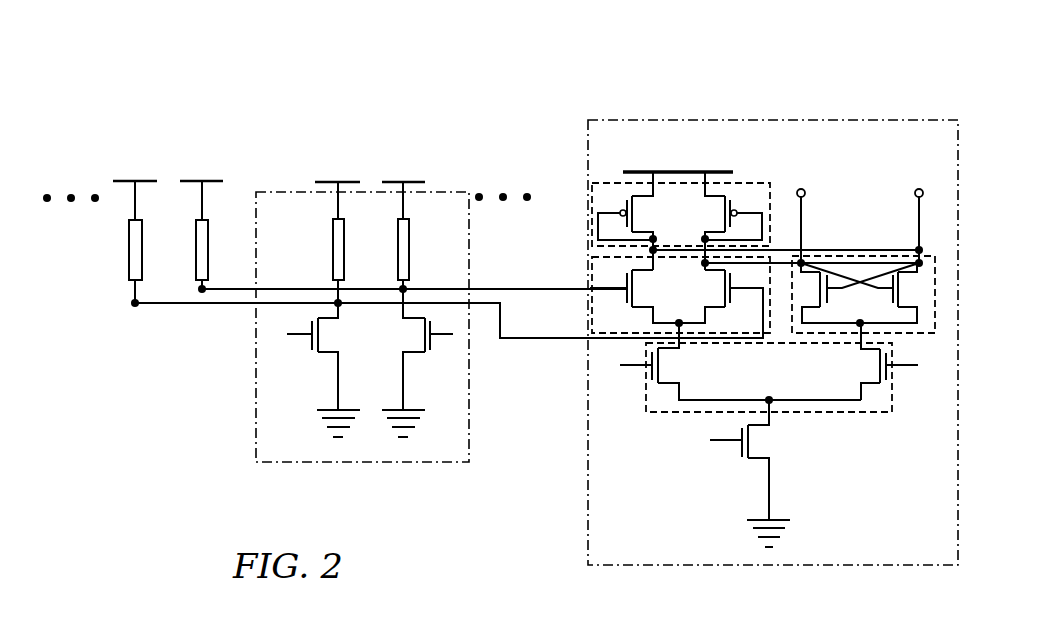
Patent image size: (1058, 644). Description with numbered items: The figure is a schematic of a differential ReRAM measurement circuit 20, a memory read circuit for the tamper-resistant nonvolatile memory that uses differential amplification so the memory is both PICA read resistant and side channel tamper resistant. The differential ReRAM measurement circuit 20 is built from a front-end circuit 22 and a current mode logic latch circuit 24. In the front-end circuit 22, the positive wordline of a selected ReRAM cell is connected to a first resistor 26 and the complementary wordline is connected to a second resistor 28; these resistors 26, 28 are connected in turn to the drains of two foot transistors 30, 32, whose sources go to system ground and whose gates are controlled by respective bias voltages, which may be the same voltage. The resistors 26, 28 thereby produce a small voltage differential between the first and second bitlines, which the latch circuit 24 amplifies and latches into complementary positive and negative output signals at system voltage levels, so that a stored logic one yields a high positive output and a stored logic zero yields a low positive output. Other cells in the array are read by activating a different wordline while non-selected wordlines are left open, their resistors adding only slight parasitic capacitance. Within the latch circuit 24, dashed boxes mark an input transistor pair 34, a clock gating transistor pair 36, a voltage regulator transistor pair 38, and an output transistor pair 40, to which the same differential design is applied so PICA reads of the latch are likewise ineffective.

The differential ReRAM measurement circuit 20 is at (528, 100).
The front-end circuit 22 is at (265, 464).
The current mode logic (CML) latch circuit 24 is at (847, 120).
The first resistor 26 is at (333, 221).
The second resistor 28 is at (398, 267).
The foot transistor 30 is at (325, 354).
The foot transistor 32 is at (410, 354).
The input transistor pair 34 is at (617, 338).
The clock gating transistor pair 36 is at (615, 182).
The voltage regulator transistor pair 38 is at (800, 413).
The output transistor pair 40 is at (825, 250).